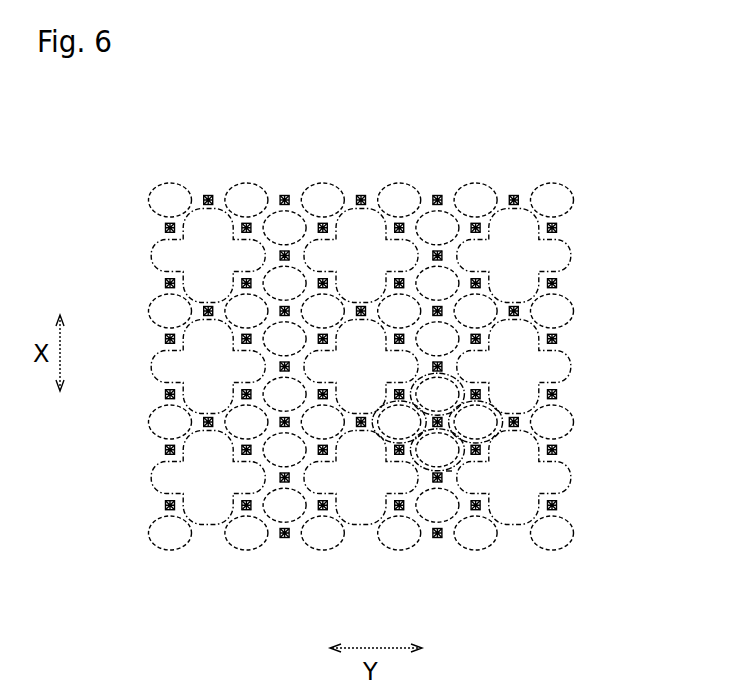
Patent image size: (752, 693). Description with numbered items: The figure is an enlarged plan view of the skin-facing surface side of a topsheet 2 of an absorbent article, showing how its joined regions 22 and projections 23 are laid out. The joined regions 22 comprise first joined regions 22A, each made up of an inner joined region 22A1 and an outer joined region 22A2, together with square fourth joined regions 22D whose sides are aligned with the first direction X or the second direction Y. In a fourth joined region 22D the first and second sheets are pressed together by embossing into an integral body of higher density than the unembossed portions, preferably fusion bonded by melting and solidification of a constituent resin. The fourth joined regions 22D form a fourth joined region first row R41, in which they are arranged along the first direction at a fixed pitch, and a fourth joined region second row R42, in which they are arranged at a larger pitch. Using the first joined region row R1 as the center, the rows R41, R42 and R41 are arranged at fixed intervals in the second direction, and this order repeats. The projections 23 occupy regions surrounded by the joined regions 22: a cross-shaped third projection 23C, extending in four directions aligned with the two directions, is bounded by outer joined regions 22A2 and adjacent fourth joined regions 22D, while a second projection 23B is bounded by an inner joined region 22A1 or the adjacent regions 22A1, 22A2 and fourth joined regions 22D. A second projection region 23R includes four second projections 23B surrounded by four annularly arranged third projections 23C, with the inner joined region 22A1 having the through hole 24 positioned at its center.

The topsheet 2 is at (636, 134).
The first joined region row R1 is at (437, 178).
The fourth joined region first row R41 is at (552, 204).
The fourth joined region second row R42 is at (514, 176).
The joined regions 22 is at (394, 502).
The first joined regions 22A is at (428, 507).
The inner joined region 22A1 is at (478, 447).
The outer joined region 22A2 is at (436, 465).
The fourth joined region 22D is at (465, 382).
The projections 23 is at (381, 405).
The second projection 23B is at (398, 412).
The third projection 23C is at (176, 483).
The second projection region 23R is at (447, 479).
The through hole 24 is at (287, 538).